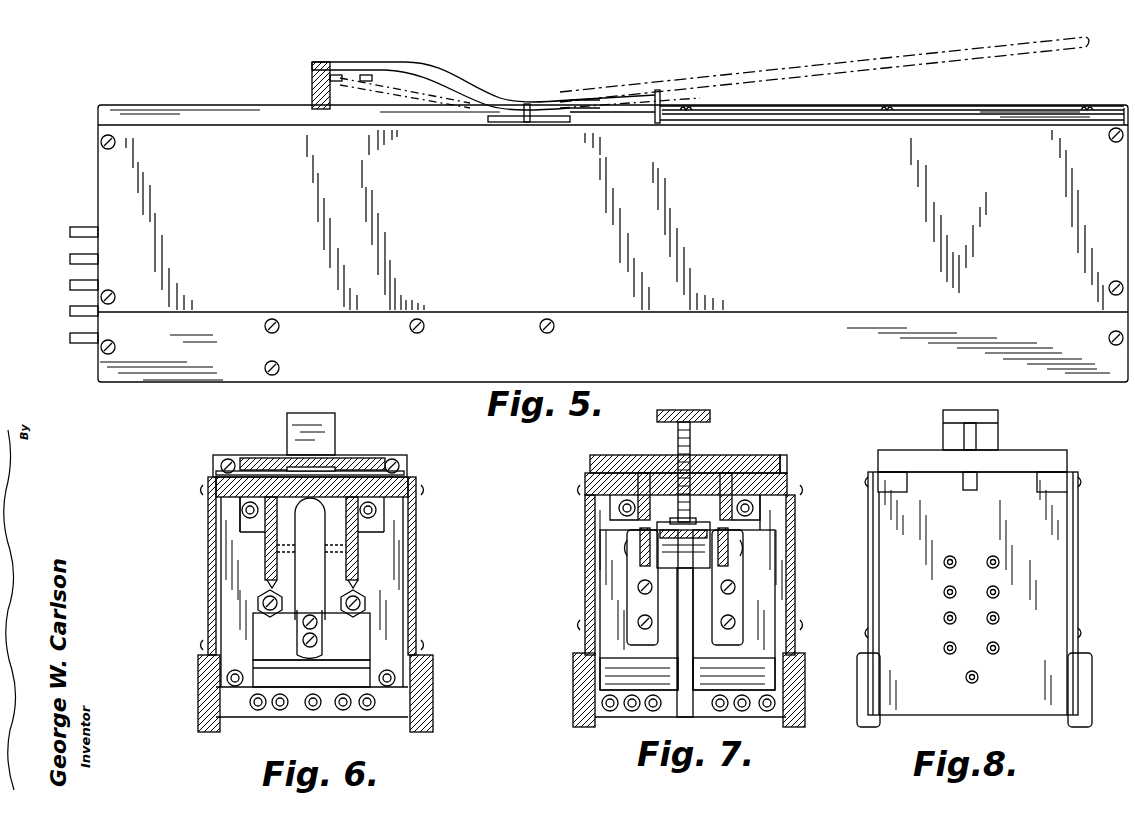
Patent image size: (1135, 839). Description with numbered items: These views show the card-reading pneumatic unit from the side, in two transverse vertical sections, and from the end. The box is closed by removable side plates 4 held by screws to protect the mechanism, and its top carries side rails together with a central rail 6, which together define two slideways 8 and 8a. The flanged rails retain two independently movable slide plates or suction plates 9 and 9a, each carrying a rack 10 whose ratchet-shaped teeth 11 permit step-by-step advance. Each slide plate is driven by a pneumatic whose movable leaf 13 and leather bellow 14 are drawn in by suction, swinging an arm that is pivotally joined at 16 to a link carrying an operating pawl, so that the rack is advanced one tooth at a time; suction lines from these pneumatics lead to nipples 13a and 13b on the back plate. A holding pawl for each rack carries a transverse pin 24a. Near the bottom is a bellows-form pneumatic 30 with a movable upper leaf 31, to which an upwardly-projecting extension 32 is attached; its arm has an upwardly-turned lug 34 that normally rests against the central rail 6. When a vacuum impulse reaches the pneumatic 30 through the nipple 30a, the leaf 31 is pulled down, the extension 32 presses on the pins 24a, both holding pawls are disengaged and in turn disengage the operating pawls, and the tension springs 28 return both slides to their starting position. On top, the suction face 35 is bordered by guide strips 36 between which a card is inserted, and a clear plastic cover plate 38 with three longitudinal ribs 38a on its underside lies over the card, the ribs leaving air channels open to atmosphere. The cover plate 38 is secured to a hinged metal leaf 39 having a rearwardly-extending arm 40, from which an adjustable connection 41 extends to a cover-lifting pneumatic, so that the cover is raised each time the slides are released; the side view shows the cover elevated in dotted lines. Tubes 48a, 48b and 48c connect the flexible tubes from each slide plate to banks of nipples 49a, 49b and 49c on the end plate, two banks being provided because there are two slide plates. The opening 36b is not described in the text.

In FIG. 5, the side plate 4 is at (98, 200).
In FIG. 6, the side plate 4 is at (208, 596).
In FIG. 7, the side plate 4 is at (585, 612).
In FIG. 8, the side plate 4 is at (974, 599).
In FIG. 8, the central rail 6 is at (968, 478).
In FIG. 6, the slideway 8 is at (208, 496).
In FIG. 7, the slideway 8 is at (585, 478).
In FIG. 8, the slideway 8 is at (885, 480).
In FIG. 7, the slideway 8a is at (787, 468).
In FIG. 8, the slideway 8a is at (1060, 480).
In FIG. 6, the slide plate 9 is at (240, 497).
In FIG. 7, the slide plate 9 is at (590, 462).
In FIG. 6, the slide plate 9a is at (384, 497).
In FIG. 7, the slide plate 9a is at (760, 495).
In FIG. 6, the rack 10 is at (268, 497).
In FIG. 7, the rack 10 is at (640, 473).
In FIG. 6, the ratchet teeth 11 is at (270, 535).
In FIG. 7, the ratchet teeth 11 is at (657, 540).
In FIG. 7, the movable leaf 13 is at (610, 638).
In FIG. 8, the nipple 13a is at (944, 562).
In FIG. 8, the nipple 13b is at (1003, 560).
In FIG. 7, the leather bellow 14 is at (600, 678).
In FIG. 7, the pivot 16 is at (640, 555).
In FIG. 6, the transverse pin 24a is at (285, 550).
In FIG. 6, the tension spring 28 is at (242, 516).
In FIG. 7, the tension spring 28 is at (619, 508).
In FIG. 6, the pneumatic 30 is at (253, 668).
In FIG. 8, the nipple 30a is at (966, 678).
In FIG. 6, the movable upper leaf 31 is at (253, 632).
In FIG. 6, the upwardly-projecting extension 32 is at (311, 622).
In FIG. 6, the upwardly-turned lug 34 is at (325, 525).
In FIG. 5, the suction face 35 is at (1010, 122).
In FIG. 6, the suction face 35 is at (222, 460).
In FIG. 5, the guide strip 36 is at (1052, 110).
In FIG. 6, the guide strip 36 is at (213, 468).
In FIG. 6, the cover plate opening 36b is at (312, 712).
In FIG. 5, the cover plate 38 is at (925, 48).
In FIG. 6, the cover plate 38 is at (335, 458).
In FIG. 6, the longitudinal ribs 38a is at (290, 462).
In FIG. 5, the hinged metal leaf 39 is at (630, 98).
In FIG. 5, the rearwardly-extending arm 40 is at (455, 82).
In FIG. 6, the rearwardly-extending arm 40 is at (330, 414).
In FIG. 7, the rearwardly-extending arm 40 is at (710, 418).
In FIG. 8, the rearwardly-extending arm 40 is at (998, 418).
In FIG. 5, the adjustable connection 41 is at (312, 90).
In FIG. 7, the adjustable connection 41 is at (678, 440).
In FIG. 6, the tube 48a is at (227, 680).
In FIG. 6, the tube 48b is at (250, 704).
In FIG. 6, the tube 48c is at (278, 712).
In FIG. 8, the nipple 49a is at (944, 592).
In FIG. 8, the nipple 49b is at (944, 618).
In FIG. 8, the nipple 49c is at (944, 648).